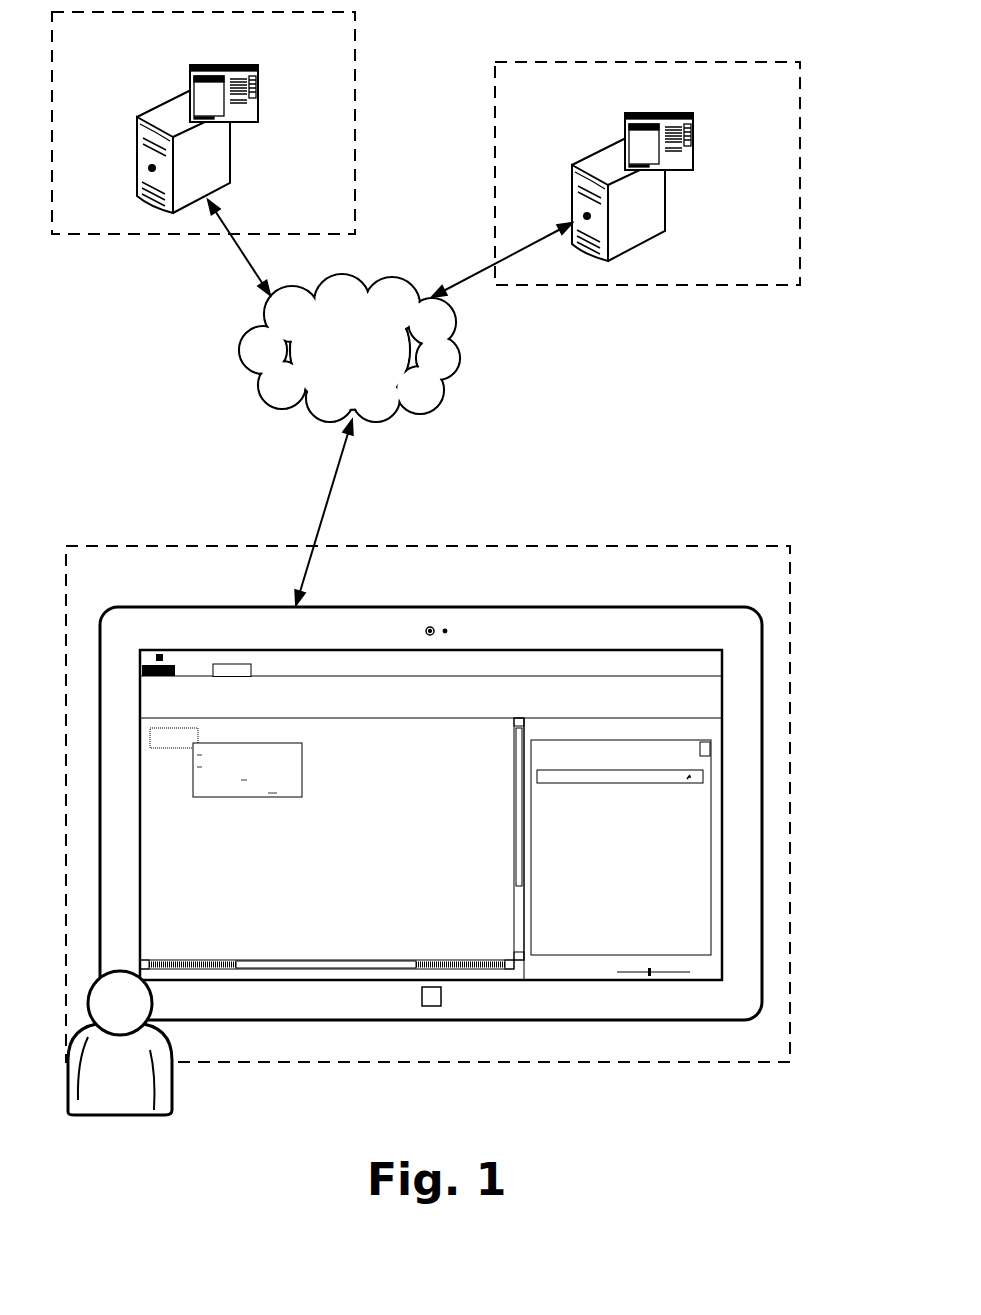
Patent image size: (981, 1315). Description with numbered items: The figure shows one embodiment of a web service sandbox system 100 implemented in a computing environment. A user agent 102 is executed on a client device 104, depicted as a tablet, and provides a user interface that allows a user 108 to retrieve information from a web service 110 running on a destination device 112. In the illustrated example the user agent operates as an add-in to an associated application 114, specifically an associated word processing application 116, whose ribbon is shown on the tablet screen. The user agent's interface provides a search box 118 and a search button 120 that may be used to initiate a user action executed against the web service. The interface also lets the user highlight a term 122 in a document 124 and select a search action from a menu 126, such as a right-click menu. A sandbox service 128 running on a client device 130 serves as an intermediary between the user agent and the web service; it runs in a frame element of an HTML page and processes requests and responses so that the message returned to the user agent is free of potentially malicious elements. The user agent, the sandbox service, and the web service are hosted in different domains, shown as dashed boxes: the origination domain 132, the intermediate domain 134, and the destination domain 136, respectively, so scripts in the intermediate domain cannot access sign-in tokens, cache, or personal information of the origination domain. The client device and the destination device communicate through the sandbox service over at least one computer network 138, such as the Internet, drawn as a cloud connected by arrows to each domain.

The web service sandbox system 100 is at (673, 409).
The user agent 102 is at (603, 718).
The client device 104 is at (690, 607).
The user 108 is at (105, 1073).
The web service 110 is at (693, 148).
The destination device 112 is at (593, 150).
The associated application 114 is at (232, 660).
The associated word processing application 116 is at (560, 963).
The search box 118 is at (600, 778).
The search button 120 is at (697, 775).
The term 122 is at (150, 737).
The document 124 is at (200, 930).
The menu 126 is at (205, 785).
The sandbox service 128 is at (258, 83).
The client device 130 is at (160, 105).
The origination domain 132 is at (789, 1059).
The intermediate domain 134 is at (352, 230).
The destination domain 136 is at (799, 280).
The computer network 138 is at (240, 354).